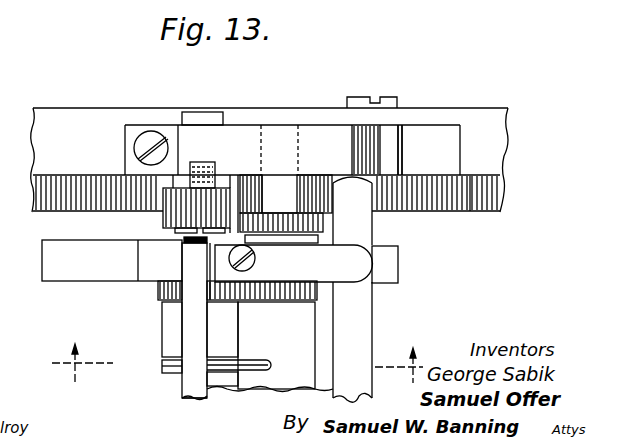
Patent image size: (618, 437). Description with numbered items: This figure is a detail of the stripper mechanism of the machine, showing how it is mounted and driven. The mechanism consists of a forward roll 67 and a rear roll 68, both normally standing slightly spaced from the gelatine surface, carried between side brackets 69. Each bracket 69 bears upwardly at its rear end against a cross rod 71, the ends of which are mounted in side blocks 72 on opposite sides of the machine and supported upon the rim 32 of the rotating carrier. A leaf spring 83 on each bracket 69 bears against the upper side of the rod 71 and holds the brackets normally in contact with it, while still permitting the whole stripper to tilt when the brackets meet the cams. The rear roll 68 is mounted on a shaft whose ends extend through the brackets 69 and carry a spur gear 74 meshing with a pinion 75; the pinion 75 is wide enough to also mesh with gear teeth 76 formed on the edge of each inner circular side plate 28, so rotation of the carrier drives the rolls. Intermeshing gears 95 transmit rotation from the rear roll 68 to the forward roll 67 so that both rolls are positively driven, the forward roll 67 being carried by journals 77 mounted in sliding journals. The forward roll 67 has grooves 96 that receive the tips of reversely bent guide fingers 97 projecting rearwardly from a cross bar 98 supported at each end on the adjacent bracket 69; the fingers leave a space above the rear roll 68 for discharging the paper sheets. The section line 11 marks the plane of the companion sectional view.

The section line 11- 11 is at (239, 357).
The inner circular side plate 28 is at (470, 220).
The rim 32 is at (480, 149).
The forward roll 67 is at (173, 318).
The rear roll 68 is at (303, 328).
The side bracket 69 is at (385, 262).
The cross rod 71 is at (362, 235).
The side block 72 is at (340, 152).
The spur gear 74 is at (323, 222).
The pinion 75 is at (163, 218).
The gear teeth 76 is at (490, 196).
The journal 77 is at (187, 241).
The leaf spring 83 is at (294, 263).
The intermeshing gears 95 is at (265, 300).
The grooves 96 is at (162, 366).
The guide fingers 97 is at (247, 363).
The cross bar 98 is at (187, 392).